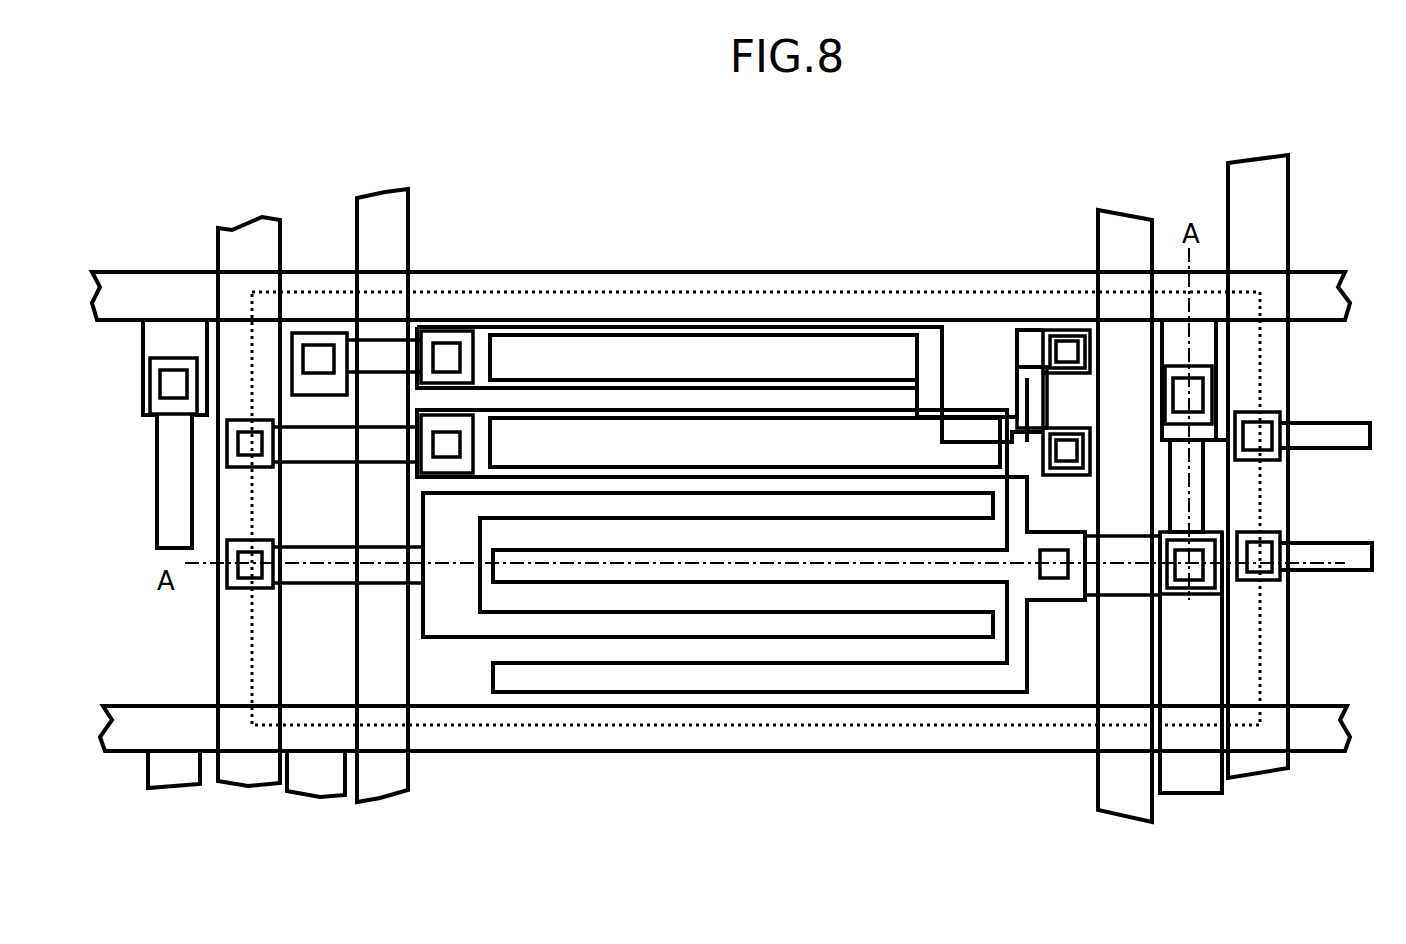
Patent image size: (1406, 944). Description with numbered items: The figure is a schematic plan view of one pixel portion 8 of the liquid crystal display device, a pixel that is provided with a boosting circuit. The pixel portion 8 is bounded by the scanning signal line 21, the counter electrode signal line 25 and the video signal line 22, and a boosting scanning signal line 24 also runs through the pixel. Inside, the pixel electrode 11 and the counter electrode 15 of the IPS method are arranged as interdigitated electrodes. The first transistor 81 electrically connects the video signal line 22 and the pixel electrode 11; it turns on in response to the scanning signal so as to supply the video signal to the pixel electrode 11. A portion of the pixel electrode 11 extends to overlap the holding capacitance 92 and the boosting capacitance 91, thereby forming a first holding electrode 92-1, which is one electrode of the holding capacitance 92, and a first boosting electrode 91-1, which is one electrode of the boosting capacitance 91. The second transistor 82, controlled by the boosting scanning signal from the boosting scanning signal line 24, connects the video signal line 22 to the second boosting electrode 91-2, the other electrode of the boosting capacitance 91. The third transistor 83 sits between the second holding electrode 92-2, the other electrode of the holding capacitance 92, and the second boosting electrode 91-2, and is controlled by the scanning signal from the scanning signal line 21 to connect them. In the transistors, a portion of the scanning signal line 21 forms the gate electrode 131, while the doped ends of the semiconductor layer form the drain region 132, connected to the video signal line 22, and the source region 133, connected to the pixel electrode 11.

The pixel portion 8 is at (583, 290).
The pixel electrode 11 is at (848, 567).
The counter electrode 15 is at (743, 613).
The scanning signal line 21 is at (1122, 250).
The video signal line 22 is at (675, 285).
The boosting scanning signal line 24 is at (382, 778).
The counter electrode signal line 25 is at (242, 760).
The first transistor 81 is at (1197, 478).
The second transistor 82 is at (387, 357).
The third transistor 83 is at (1068, 407).
The boosting capacitance 91 is at (732, 284).
The first boosting electrode 91-1 is at (907, 350).
The second boosting electrode 91-2 is at (490, 333).
The holding capacitance 92 is at (730, 307).
The first holding electrode 92-1 is at (823, 435).
The second holding electrode 92-2 is at (993, 423).
The gate electrode 131 is at (1212, 502).
The drain region 132 is at (1223, 588).
The source region 133 is at (1217, 393).